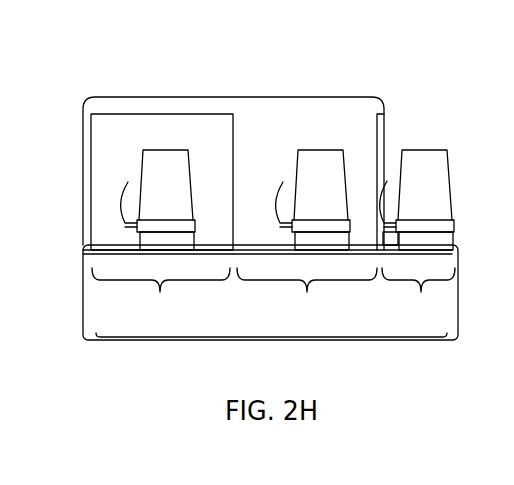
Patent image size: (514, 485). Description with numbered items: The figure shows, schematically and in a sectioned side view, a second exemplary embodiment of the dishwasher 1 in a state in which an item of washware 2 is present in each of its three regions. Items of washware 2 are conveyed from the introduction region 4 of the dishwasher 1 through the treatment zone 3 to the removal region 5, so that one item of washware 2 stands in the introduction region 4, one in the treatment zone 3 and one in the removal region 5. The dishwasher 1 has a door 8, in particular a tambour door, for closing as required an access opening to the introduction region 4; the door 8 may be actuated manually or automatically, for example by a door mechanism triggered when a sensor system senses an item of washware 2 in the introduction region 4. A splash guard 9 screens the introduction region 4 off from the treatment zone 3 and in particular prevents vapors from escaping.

The dishwasher 1 is at (259, 182).
The item of washware 2 is at (162, 168).
The treatment zone 3 is at (307, 295).
The introduction region 4 is at (161, 295).
The removal region 5 is at (418, 295).
The door 8 is at (82, 165).
The splash guard 9 is at (233, 167).